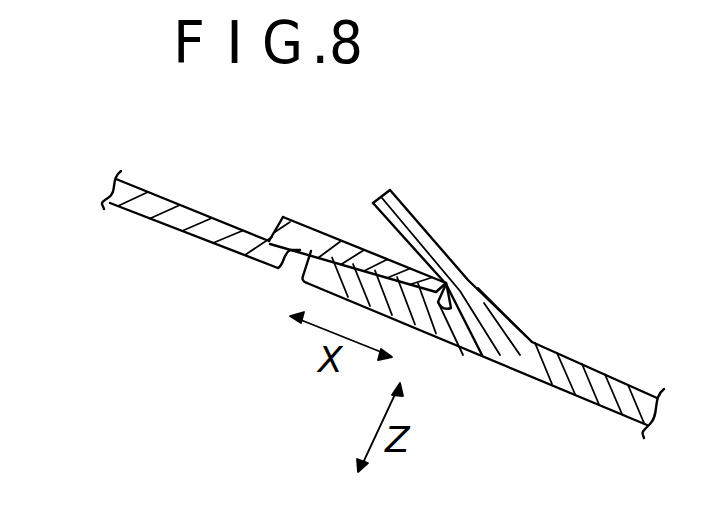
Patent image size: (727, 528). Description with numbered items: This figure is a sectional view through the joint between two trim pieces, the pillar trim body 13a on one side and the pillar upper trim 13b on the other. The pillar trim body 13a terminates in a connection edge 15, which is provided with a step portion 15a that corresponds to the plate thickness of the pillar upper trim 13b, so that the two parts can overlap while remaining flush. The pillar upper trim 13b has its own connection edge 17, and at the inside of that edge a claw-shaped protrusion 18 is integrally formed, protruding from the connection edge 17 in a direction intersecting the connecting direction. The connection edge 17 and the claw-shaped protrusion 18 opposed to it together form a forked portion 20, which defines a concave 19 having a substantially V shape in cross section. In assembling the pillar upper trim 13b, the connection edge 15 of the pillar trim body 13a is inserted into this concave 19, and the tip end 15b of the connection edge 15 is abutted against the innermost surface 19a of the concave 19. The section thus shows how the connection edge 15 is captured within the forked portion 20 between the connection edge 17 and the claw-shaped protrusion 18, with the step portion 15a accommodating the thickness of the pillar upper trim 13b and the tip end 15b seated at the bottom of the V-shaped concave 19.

The pillar trim body 13a is at (173, 222).
The pillar upper trim 13b is at (580, 388).
The connection edge 15 is at (320, 234).
The step portion 15a is at (291, 263).
The tip end 15b is at (447, 290).
The connection edge 17 is at (512, 341).
The claw-shaped protrusion 18 is at (424, 233).
The concave 19 is at (384, 226).
The innermost surface 19a is at (445, 282).
The forked portion 20 is at (455, 250).